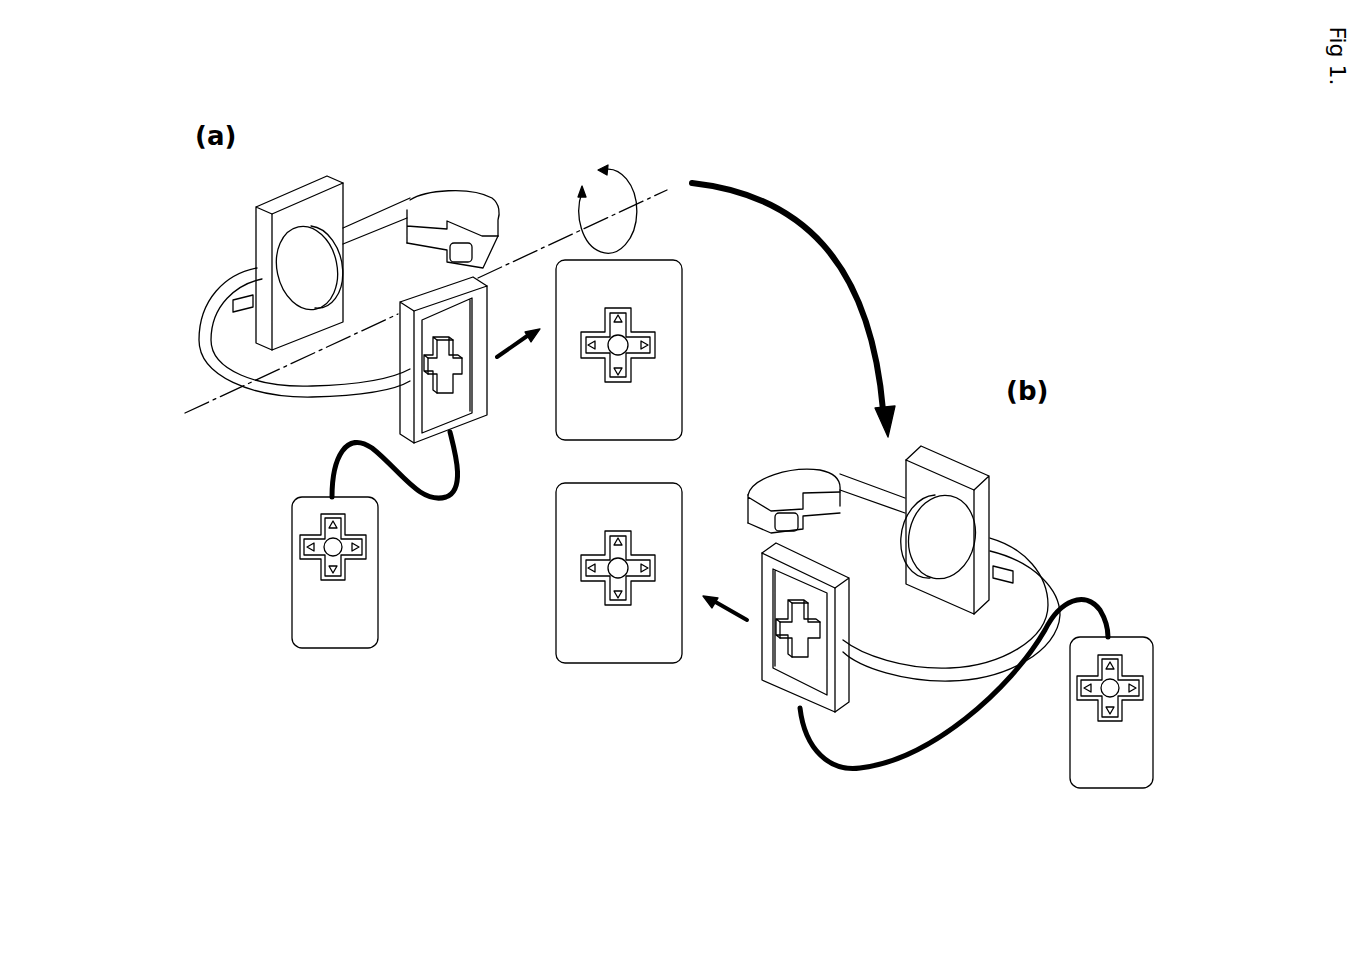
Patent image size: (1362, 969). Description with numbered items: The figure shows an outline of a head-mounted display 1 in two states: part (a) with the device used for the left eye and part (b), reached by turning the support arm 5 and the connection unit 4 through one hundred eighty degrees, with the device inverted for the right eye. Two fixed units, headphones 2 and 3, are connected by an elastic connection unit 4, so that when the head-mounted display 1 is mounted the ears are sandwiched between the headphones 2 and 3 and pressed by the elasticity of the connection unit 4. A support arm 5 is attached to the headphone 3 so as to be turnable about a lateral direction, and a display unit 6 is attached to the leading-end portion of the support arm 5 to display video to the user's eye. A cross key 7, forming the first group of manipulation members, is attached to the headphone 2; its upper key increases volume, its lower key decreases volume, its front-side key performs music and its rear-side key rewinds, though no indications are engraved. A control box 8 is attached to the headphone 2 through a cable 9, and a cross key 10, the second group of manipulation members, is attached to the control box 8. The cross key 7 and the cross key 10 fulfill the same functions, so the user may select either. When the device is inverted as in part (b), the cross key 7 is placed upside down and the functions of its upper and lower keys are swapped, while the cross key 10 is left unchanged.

The head-mounted display 1 is at (446, 180).
The headphone 2 is at (488, 293).
The headphone 3 is at (283, 187).
The connection unit 4 is at (270, 403).
The support arm 5 is at (380, 212).
The display unit 6 is at (460, 213).
The cross key 7 is at (453, 383).
The control box 8 is at (378, 580).
The cable 9 is at (450, 497).
The cross key 10 is at (372, 537).